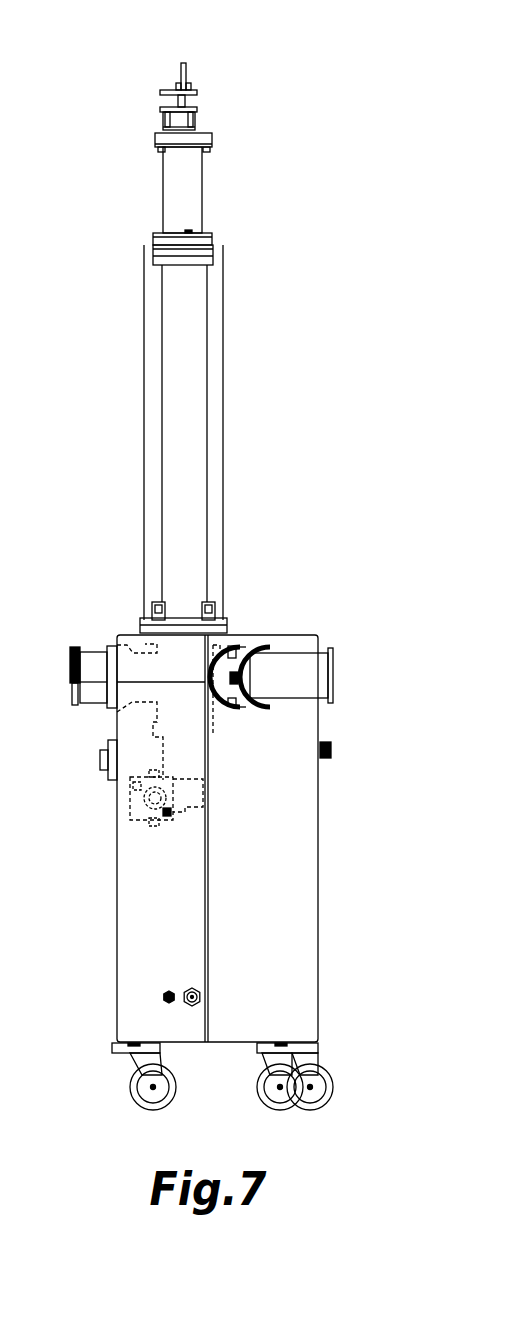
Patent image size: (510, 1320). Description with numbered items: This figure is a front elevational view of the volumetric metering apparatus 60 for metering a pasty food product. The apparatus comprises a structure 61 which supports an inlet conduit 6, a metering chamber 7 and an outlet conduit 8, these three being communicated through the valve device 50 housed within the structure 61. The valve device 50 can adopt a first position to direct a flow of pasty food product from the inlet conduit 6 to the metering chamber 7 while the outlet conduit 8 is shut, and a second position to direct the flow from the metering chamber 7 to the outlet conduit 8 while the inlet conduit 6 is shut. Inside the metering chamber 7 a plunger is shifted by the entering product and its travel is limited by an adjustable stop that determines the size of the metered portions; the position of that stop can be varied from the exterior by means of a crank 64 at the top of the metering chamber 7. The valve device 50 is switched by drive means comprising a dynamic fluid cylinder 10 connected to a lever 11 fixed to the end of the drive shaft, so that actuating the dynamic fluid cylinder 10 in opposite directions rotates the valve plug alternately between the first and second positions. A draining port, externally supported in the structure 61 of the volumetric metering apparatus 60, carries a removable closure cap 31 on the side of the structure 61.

The crank 64 is at (170, 92).
The metering chamber 7 is at (170, 390).
The volumetric metering apparatus 60 is at (277, 402).
The structure 61 is at (312, 893).
The inlet conduit 6 is at (100, 657).
The outlet conduit 8 is at (240, 650).
The valve device 50 is at (137, 722).
The removable closure cap 31 is at (100, 765).
The dynamic fluid cylinder 10 is at (143, 797).
The lever 11 is at (163, 817).